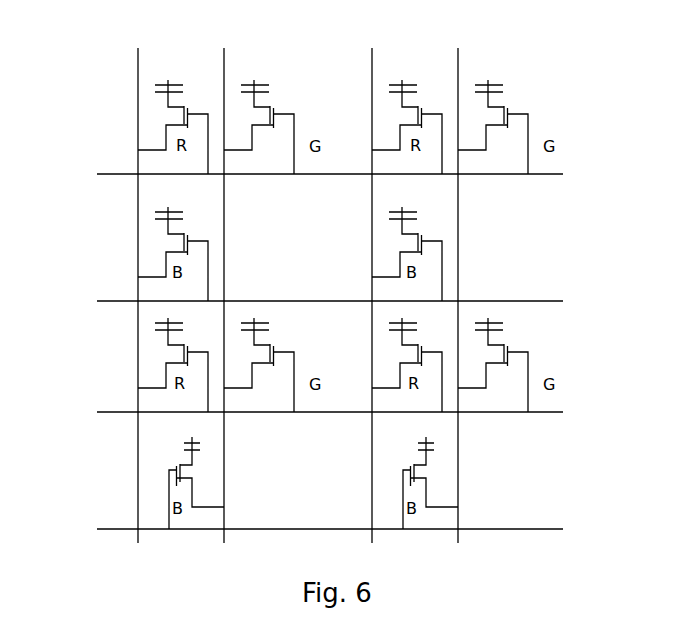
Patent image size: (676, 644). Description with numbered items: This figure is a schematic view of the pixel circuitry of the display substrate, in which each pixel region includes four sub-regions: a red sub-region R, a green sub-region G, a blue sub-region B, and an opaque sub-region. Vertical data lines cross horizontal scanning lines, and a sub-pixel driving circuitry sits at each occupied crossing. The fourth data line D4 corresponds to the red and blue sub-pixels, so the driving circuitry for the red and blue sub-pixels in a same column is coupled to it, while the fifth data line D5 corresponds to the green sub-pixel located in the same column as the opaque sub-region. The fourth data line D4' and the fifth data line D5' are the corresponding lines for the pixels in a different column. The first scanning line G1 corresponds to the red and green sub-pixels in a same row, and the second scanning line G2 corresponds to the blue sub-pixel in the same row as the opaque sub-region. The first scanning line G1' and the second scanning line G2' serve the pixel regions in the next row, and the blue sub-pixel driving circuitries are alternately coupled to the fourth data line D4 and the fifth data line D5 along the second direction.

The fourth data line D4 is at (136, 283).
The fifth data line D5 is at (223, 283).
The fourth data line D4' is at (379, 283).
The fifth data line D5' is at (463, 283).
The first scanning line G1 is at (305, 174).
The second scanning line G2 is at (305, 301).
The first scanning line G1' is at (305, 412).
The gate line G2' is at (305, 530).